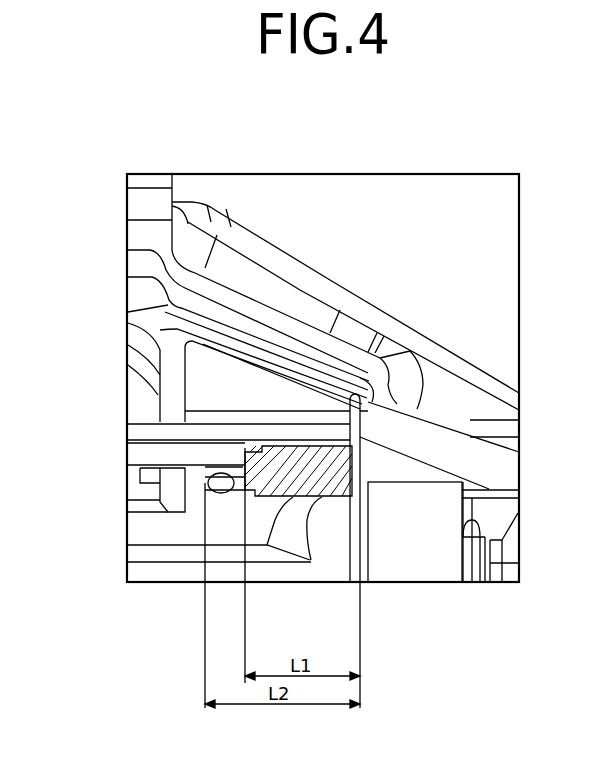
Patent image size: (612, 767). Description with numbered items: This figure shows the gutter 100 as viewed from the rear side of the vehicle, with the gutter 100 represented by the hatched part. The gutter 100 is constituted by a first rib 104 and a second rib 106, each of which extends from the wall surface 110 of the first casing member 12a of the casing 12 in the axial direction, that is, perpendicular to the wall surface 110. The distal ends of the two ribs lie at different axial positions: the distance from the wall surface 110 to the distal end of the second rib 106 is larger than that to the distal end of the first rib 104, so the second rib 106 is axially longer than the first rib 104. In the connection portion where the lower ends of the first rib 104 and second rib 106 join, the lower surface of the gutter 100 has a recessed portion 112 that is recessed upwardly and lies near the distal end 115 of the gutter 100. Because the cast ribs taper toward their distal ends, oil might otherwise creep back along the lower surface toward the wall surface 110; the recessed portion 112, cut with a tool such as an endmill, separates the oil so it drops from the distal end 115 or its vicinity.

The casing 12 is at (345, 268).
The first casing member 12a is at (370, 281).
The gutter 100 is at (235, 447).
The second rib 106 is at (228, 465).
The distal end of the gutter 115 is at (238, 467).
The recessed portion 112 is at (240, 496).
The first rib 104 is at (318, 488).
The wall surface 110 is at (356, 545).